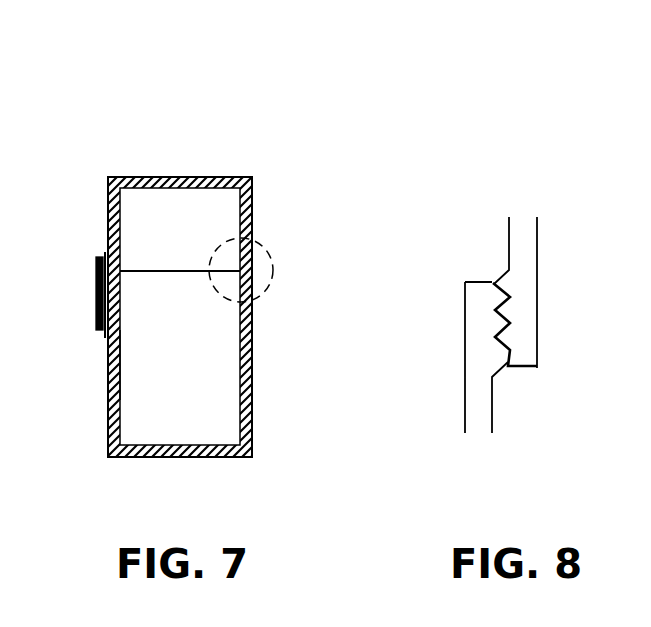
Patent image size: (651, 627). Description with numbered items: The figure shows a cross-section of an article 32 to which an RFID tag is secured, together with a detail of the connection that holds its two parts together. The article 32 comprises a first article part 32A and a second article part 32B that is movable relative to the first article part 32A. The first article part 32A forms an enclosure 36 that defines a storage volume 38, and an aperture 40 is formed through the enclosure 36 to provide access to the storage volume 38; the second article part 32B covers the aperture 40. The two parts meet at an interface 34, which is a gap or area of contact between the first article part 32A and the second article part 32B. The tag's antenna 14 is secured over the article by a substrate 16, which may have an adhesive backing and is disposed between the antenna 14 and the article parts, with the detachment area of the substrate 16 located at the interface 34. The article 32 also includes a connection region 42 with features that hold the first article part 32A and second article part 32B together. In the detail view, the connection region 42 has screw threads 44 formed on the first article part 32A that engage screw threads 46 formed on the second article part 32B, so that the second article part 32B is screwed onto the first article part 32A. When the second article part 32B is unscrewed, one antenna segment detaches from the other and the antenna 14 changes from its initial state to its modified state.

In FIG. 7, the antenna 14 is at (96, 296).
In FIG. 7, the substrate 16 is at (103, 336).
In FIG. 7, the article 32 is at (215, 156).
In FIG. 7, the first article part 32A is at (108, 402).
In FIG. 8, the first article part 32A is at (478, 405).
In FIG. 7, the second article part 32B is at (108, 210).
In FIG. 8, the second article part 32B is at (517, 241).
In FIG. 7, the interface 34 is at (148, 270).
In FIG. 7, the enclosure 36 is at (120, 362).
In FIG. 7, the storage volume 38 is at (204, 414).
In FIG. 7, the aperture 40 is at (178, 286).
In FIG. 7, the connection region 42 is at (262, 242).
In FIG. 8, the connection region 42 is at (500, 279).
In FIG. 8, the screw threads 44 is at (495, 327).
In FIG. 8, the screw threads 46 is at (512, 312).